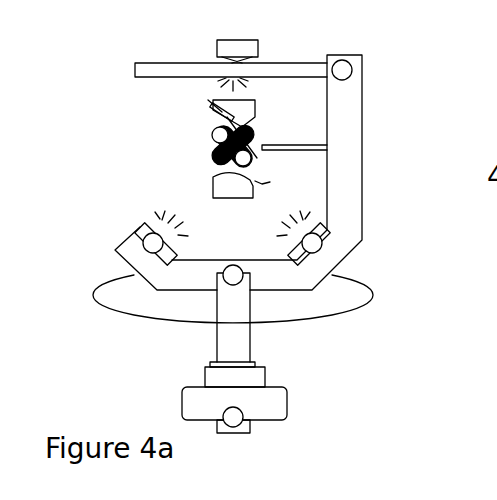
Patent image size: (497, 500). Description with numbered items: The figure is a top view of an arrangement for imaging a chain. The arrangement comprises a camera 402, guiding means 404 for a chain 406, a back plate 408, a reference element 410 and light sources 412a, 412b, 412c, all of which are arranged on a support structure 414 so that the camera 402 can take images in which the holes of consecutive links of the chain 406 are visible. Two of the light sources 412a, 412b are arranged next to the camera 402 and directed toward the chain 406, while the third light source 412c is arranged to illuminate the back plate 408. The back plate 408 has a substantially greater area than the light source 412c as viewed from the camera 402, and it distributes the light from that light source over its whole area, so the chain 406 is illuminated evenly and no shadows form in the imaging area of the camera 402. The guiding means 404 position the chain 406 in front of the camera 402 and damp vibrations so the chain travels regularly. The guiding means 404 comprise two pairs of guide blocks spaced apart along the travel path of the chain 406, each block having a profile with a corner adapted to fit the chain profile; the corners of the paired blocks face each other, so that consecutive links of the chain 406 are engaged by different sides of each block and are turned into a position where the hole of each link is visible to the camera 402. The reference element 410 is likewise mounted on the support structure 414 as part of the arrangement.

The camera 402 is at (264, 349).
The guiding means 404 is at (213, 119).
The chain 406 is at (213, 161).
The back plate 408 is at (194, 50).
The reference element 410 is at (294, 120).
The light source 412a is at (124, 230).
The light source 412b is at (360, 236).
The light source 412c is at (194, 46).
The support structure 414 is at (265, 189).